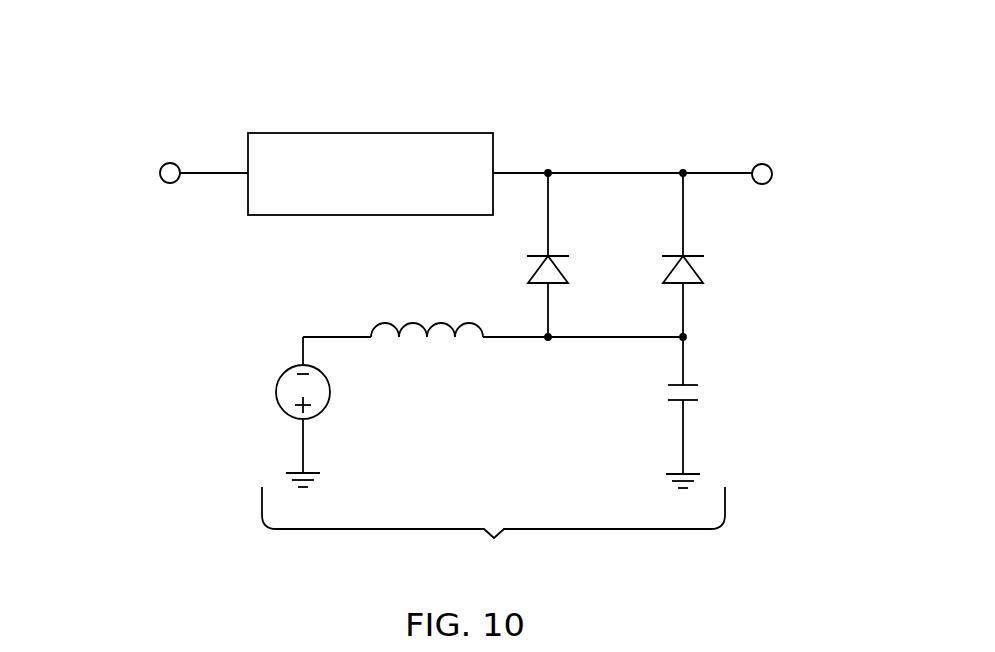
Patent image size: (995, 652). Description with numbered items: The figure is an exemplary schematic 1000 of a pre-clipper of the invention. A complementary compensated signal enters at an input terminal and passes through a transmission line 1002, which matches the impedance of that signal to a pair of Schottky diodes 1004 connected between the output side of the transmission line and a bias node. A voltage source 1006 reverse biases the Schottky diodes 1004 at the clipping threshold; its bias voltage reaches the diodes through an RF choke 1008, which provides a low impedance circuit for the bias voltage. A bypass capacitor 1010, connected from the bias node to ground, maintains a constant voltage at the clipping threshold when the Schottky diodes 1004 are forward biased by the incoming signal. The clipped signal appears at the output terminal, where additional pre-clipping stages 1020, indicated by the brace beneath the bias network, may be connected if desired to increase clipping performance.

The schematic 1000 is at (550, 70).
The transmission line 1002 is at (378, 216).
The Schottky diodes 1004 is at (662, 256).
The voltage source 1006 is at (277, 383).
The RF choke 1008 is at (418, 323).
The bypass capacitor 1010 is at (668, 400).
The additional pre-clipping stages 1020 is at (458, 421).